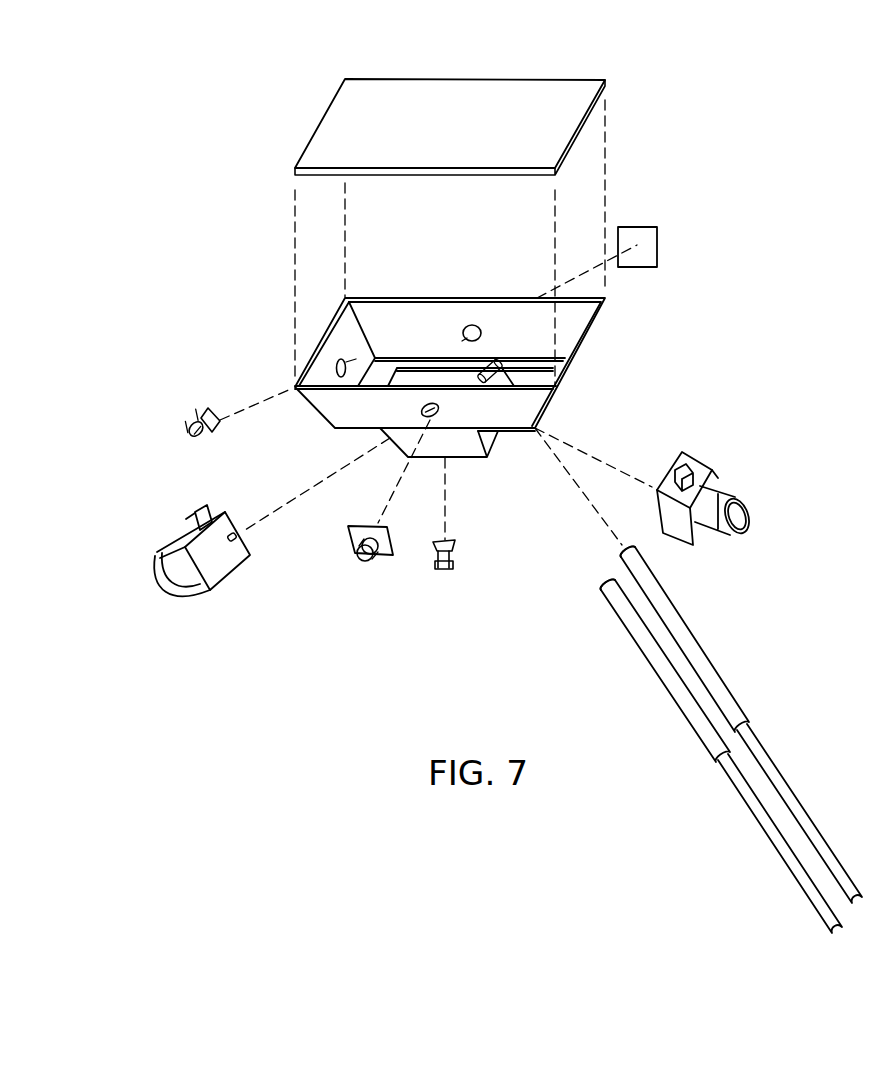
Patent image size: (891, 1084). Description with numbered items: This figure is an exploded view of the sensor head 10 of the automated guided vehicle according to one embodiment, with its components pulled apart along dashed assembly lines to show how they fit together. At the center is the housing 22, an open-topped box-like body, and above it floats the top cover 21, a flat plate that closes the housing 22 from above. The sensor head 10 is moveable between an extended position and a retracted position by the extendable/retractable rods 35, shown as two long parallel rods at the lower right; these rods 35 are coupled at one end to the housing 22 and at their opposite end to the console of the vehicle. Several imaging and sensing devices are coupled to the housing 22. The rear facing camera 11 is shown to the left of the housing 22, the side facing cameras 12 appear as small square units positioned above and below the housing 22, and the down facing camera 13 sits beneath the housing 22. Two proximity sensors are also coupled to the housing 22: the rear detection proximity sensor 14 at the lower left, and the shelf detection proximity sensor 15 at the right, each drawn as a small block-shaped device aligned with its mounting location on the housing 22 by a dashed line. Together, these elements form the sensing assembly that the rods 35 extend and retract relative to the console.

The sensor head 10 is at (192, 165).
The rear facing camera 11 is at (200, 418).
The side facing camera 12 is at (657, 245).
The down facing camera 13 is at (447, 567).
The rear detection proximity sensor 14 is at (180, 557).
The shelf detection proximity sensor 15 is at (717, 473).
The top cover 21 is at (332, 128).
The housing 22 is at (597, 318).
The extendable/retractable rods 35 is at (673, 678).